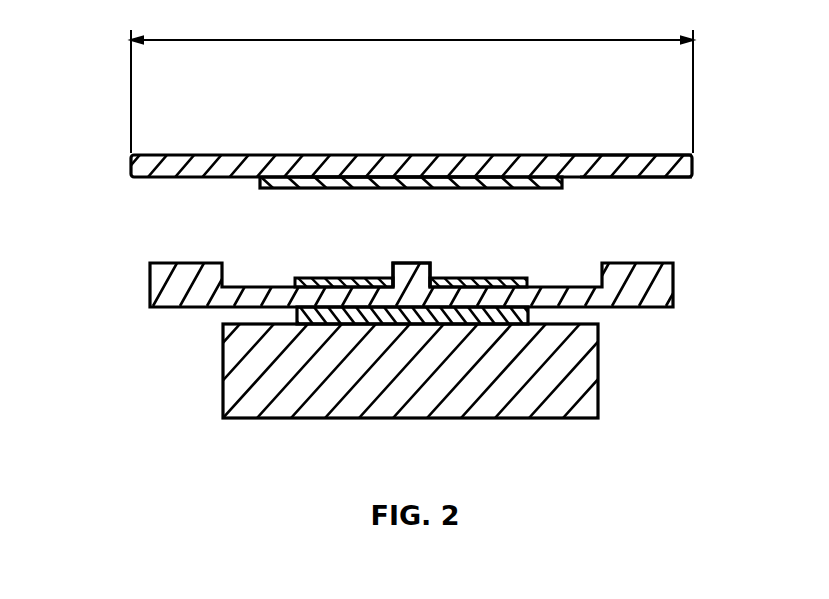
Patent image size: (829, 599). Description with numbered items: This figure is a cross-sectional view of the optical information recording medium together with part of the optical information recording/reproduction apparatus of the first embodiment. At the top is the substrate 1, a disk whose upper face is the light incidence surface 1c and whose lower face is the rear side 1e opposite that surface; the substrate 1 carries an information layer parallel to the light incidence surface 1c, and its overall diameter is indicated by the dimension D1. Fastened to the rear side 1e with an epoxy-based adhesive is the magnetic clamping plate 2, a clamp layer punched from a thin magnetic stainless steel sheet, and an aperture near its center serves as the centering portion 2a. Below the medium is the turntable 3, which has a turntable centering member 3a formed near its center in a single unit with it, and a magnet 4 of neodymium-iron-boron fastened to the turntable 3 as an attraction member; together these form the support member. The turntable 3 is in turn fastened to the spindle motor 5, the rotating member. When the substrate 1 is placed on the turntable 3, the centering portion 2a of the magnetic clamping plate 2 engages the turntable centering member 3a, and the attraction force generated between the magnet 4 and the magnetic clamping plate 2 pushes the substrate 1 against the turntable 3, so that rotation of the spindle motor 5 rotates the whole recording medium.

The substrate 1 is at (131, 165).
The light incidence surface 1c is at (613, 155).
The rear side 1e is at (660, 177).
The magnetic clamping plate 2 is at (510, 178).
The centering portion 2a is at (428, 177).
The turntable 3 is at (150, 291).
The turntable centering member 3a is at (393, 263).
The magnet 4 is at (528, 265).
The spindle motor 5 is at (598, 370).
The diameter of substrate D1 is at (412, 81).